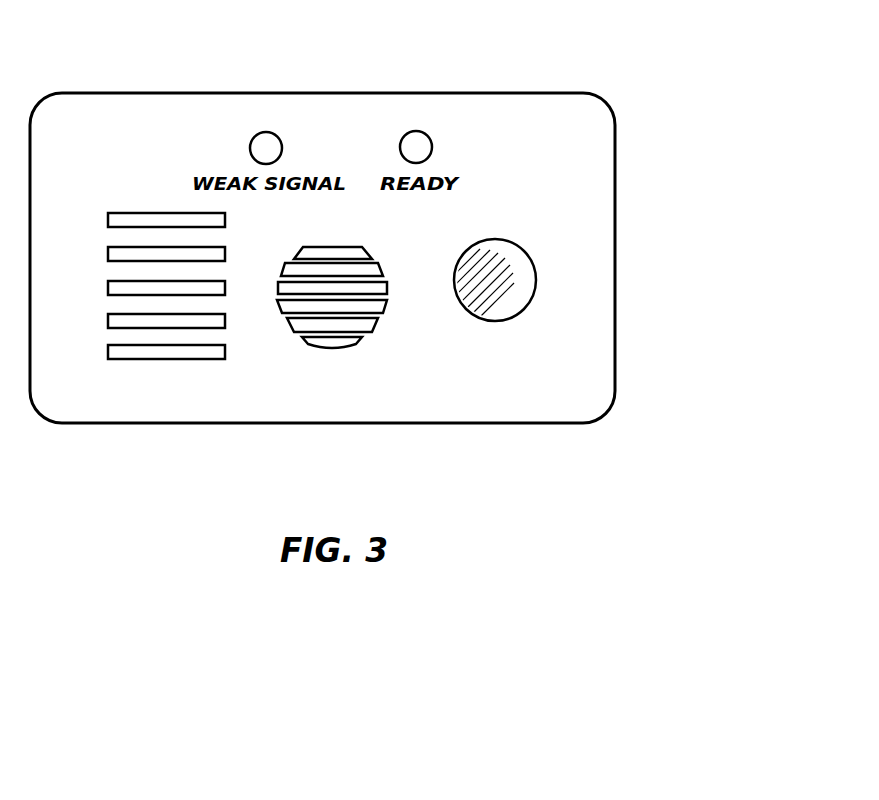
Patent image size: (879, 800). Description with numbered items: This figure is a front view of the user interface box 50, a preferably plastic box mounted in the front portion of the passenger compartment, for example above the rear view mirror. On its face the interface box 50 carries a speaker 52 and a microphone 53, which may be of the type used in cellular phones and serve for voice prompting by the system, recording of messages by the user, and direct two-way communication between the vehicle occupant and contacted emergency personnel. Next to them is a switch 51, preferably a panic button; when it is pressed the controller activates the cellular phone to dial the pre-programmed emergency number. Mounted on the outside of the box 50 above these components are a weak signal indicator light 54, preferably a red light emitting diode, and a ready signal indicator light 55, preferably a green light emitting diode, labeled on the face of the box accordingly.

The user interface box 50 is at (323, 93).
The switch 51 is at (478, 305).
The speaker 52 is at (162, 359).
The microphone 53 is at (320, 347).
The weak signal indicator light 54 is at (267, 143).
The ready signal indicator light 55 is at (416, 141).